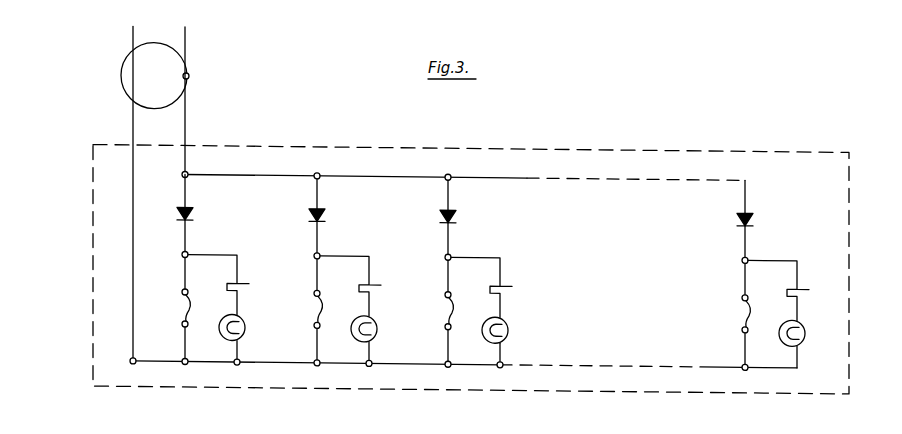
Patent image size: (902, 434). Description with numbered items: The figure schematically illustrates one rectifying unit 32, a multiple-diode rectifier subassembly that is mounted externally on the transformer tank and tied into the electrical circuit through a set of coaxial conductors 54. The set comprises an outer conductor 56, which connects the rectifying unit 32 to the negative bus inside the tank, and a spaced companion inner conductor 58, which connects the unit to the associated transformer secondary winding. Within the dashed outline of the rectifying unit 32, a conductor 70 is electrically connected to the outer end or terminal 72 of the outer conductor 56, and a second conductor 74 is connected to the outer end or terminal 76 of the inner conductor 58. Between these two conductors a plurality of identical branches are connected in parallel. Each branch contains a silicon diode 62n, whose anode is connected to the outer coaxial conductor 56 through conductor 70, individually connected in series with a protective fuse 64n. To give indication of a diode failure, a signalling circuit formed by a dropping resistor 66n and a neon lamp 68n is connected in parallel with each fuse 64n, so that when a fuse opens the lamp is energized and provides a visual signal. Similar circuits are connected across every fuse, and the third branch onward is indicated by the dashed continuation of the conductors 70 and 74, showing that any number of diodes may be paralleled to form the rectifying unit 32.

The rectifying unit 32 is at (172, 389).
The coaxial conductors 54 is at (125, 62).
The outer conductor 56 is at (186, 118).
The inner conductor 58 is at (133, 119).
The conductor 70 is at (363, 175).
The outer end or terminal 72 is at (181, 177).
The conductor 74 is at (283, 363).
The outer end or terminal 76 is at (130, 363).
The silicon diode 62n is at (755, 219).
The fuse 64n is at (747, 308).
The dropping resistor 66n is at (809, 282).
The neon lamp 68n is at (806, 330).